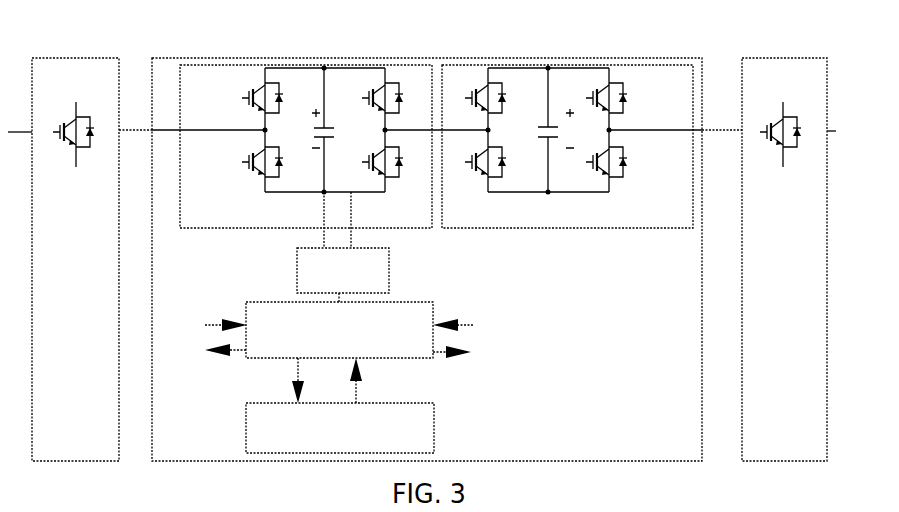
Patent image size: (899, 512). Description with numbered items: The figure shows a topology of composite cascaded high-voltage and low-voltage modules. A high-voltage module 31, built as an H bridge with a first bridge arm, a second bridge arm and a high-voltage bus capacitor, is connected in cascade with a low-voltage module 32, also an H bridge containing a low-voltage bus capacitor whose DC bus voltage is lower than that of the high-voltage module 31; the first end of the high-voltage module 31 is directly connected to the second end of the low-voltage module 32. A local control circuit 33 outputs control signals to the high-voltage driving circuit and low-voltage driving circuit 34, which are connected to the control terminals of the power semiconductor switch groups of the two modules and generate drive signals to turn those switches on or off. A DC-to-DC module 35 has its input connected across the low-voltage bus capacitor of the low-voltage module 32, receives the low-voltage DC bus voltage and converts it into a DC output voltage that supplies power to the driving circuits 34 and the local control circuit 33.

The high-voltage module 31 is at (583, 63).
The low-voltage module 32 is at (288, 63).
The local control circuit 33 is at (434, 418).
The high-voltage driving circuit and low-voltage driving circuit 34 is at (413, 302).
The DC-to-DC module 35 is at (297, 267).